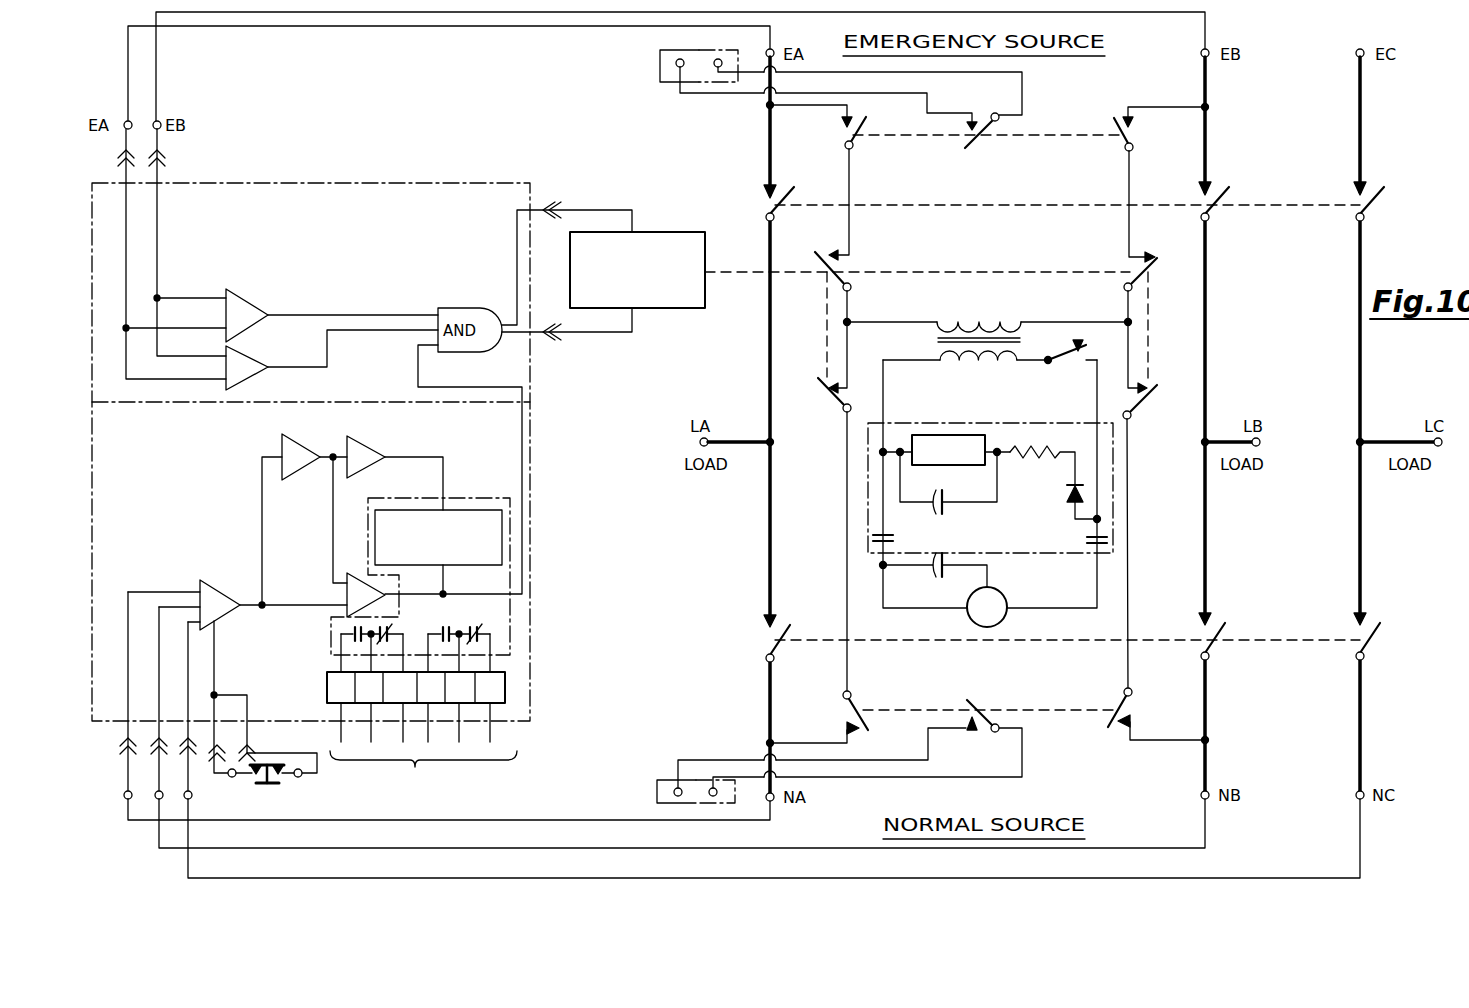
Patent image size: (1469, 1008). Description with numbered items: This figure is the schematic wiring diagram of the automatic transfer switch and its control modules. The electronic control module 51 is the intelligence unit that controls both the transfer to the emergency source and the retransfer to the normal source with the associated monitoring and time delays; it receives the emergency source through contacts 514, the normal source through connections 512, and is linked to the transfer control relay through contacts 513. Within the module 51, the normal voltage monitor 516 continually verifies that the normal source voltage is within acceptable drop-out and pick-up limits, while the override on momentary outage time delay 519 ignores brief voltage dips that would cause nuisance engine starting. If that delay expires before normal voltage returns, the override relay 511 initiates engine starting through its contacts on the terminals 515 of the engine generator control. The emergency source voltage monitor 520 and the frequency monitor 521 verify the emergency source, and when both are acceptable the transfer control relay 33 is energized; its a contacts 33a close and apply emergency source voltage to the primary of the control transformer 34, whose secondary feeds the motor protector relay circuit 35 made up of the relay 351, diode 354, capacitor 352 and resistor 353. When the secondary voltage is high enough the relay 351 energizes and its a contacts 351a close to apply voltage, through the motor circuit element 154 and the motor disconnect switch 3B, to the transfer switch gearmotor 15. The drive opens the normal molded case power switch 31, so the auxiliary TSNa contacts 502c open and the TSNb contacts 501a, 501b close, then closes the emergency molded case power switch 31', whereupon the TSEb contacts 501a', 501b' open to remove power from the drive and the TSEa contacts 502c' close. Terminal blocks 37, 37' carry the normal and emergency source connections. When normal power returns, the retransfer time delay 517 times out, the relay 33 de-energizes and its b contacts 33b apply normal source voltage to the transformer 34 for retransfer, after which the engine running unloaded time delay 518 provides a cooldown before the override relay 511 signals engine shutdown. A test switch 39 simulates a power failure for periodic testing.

The electronic control module 51 is at (395, 181).
The transfer control relay contacts 513 is at (549, 200).
The emergency source contacts 514 is at (170, 154).
The frequency monitor 521 is at (253, 290).
The emergency source voltage monitor 520 is at (264, 373).
The retransfer to the normal source time delay 517 is at (282, 446).
The engine running unloaded time delay 518 is at (373, 446).
The override relay 511 is at (482, 508).
The normal voltage monitor 516 is at (218, 585).
The override on momentary outage time delay 519 is at (345, 592).
The terminals TB1 through TB6 515 is at (325, 680).
The normal source terminals 512 is at (120, 741).
The test switch 39 is at (272, 786).
The transfer control relay 33 is at (682, 228).
The terminal block 37' is at (809, 80).
The terminal block 37 is at (820, 765).
The emergency molded case power switch 31' is at (1082, 178).
The normal molded case power switch 31 is at (1079, 621).
The auxiliary switch contact TSEb1 501a' is at (844, 182).
The auxiliary TSEa contacts 502c' is at (987, 148).
The auxiliary switch contact TSEb2 501b' is at (1120, 171).
The transfer control relay contacts 33a is at (820, 250).
The transfer control relay contacts 33b is at (820, 392).
The auxiliary TSNb contact 501a is at (834, 700).
The auxiliary TSNa contacts 502c is at (989, 694).
The auxiliary TSNb contact 501b is at (1126, 699).
The control transformer 34 is at (945, 318).
The motor disconnect switch 3B is at (1062, 344).
The motor protector relay circuit 35 is at (908, 420).
The motor protector relay 351 is at (958, 434).
The resistor 353 is at (1045, 443).
The diode 354 is at (1066, 496).
The capacitor 352 is at (955, 492).
The relay contacts 351a is at (1092, 532).
The motor capacitor 154 is at (934, 573).
The gear motor 15 is at (1003, 592).